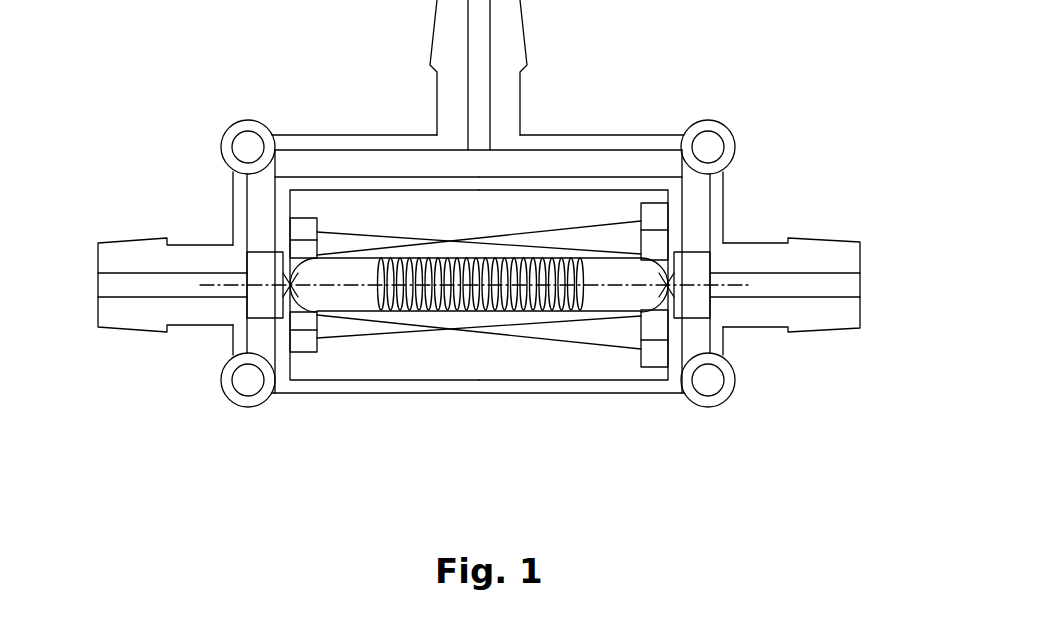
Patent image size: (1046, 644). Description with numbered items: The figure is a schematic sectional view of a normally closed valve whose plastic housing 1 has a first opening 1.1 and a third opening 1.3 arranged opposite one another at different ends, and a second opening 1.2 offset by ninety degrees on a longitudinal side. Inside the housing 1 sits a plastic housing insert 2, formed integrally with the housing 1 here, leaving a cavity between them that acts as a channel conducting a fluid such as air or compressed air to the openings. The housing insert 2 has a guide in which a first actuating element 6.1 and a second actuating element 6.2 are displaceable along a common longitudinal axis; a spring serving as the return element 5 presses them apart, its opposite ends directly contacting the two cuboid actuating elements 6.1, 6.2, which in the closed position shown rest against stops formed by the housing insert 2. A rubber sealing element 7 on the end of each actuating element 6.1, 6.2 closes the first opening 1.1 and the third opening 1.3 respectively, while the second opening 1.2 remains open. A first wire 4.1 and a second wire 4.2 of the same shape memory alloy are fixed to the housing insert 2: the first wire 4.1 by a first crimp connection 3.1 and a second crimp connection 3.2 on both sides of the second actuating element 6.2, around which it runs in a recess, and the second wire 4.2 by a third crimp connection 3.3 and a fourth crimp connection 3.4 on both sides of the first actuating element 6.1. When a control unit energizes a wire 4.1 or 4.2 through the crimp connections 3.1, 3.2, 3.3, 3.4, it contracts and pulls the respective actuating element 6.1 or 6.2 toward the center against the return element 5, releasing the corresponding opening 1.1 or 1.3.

The housing 1 is at (310, 135).
The first opening 1.1 is at (148, 290).
The second opening 1.2 is at (478, 80).
The third opening 1.3 is at (833, 287).
The housing insert 2 is at (452, 312).
The first crimp connection 3.1 is at (668, 204).
The second crimp connection 3.2 is at (657, 367).
The third crimp connection 3.3 is at (315, 218).
The fourth crimp connection 3.4 is at (293, 394).
The first wire 4.1 is at (578, 345).
The second wire 4.2 is at (363, 337).
The return element 5 is at (470, 312).
The first actuating element 6.1 is at (357, 257).
The second actuating element 6.2 is at (655, 257).
The sealing element 7 is at (270, 252).